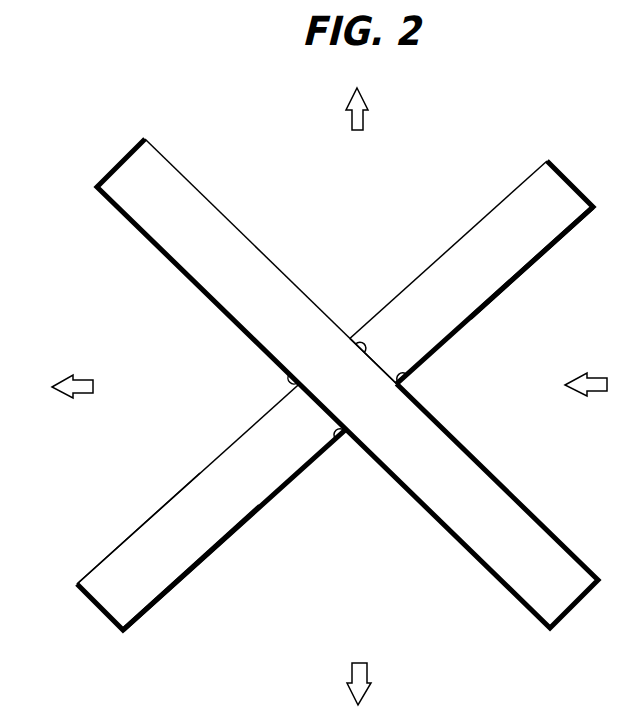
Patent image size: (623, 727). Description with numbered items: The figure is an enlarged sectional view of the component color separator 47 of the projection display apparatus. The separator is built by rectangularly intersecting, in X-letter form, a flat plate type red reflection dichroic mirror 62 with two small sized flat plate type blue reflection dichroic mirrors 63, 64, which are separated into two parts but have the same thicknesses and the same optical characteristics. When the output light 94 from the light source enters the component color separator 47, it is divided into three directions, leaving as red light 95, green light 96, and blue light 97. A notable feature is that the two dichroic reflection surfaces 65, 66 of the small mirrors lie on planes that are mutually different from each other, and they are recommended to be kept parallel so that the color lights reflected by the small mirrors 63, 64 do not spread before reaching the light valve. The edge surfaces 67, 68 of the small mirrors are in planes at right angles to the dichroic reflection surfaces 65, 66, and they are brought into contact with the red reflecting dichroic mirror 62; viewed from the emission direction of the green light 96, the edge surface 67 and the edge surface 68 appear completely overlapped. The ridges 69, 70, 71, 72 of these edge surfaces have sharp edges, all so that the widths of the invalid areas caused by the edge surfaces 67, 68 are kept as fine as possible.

The component color separator 47 is at (266, 687).
The red reflection dichroic mirror 62 is at (193, 248).
The blue reflection dichroic mirror 63 is at (458, 247).
The blue reflection dichroic mirror 64 is at (153, 514).
The dichroic reflection surface 65 is at (493, 304).
The dichroic reflection surface 66 is at (237, 533).
The edge surface 67 is at (381, 369).
The edge surface 68 is at (313, 400).
The ridge 69 is at (407, 380).
The ridge 70 is at (364, 343).
The ridge 71 is at (338, 437).
The ridge 72 is at (290, 379).
The output light 94 is at (600, 378).
The red light 95 is at (365, 130).
The green light 96 is at (90, 380).
The blue light 97 is at (365, 663).